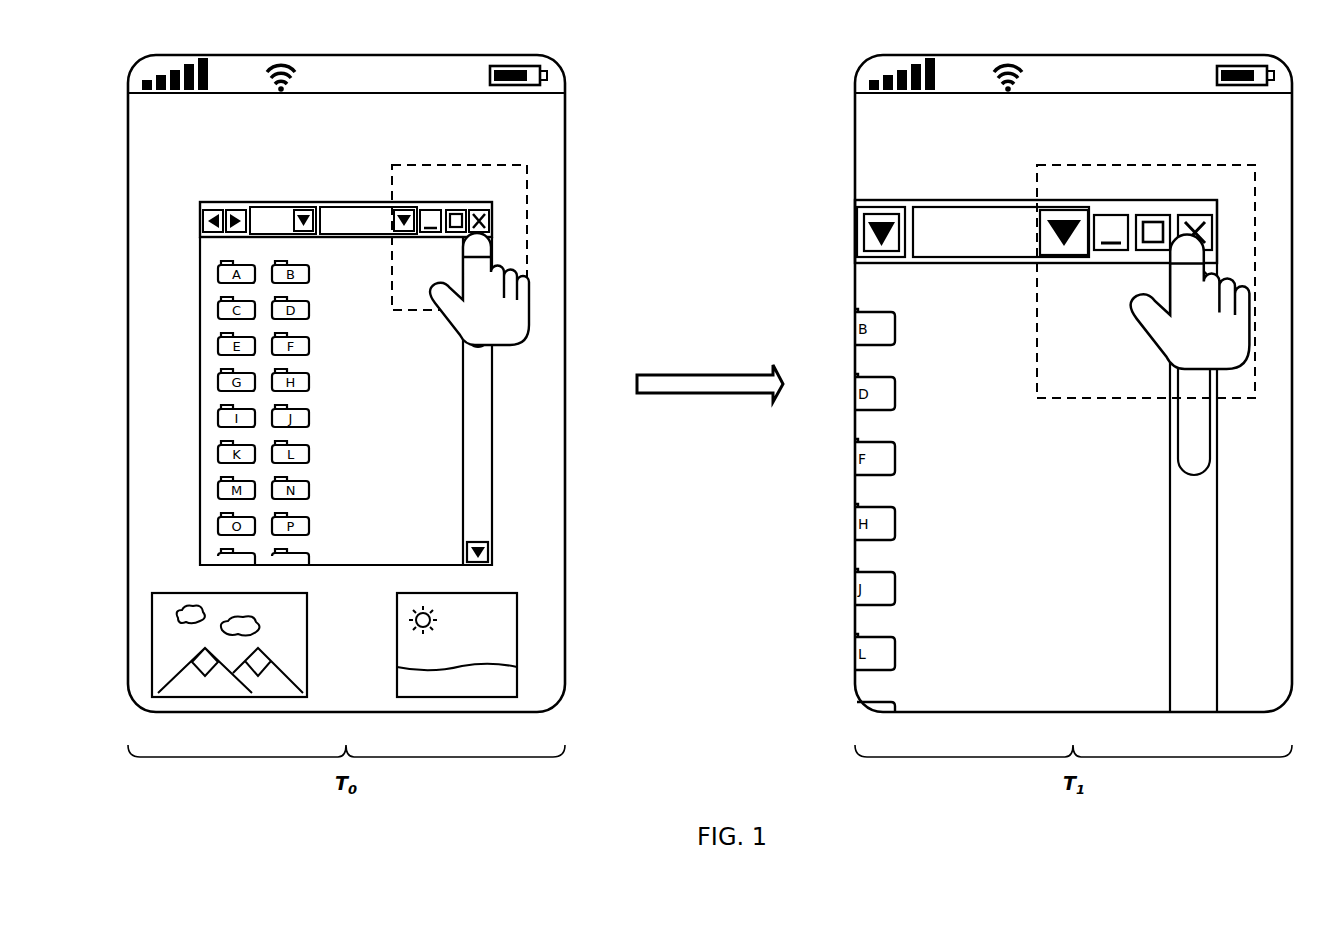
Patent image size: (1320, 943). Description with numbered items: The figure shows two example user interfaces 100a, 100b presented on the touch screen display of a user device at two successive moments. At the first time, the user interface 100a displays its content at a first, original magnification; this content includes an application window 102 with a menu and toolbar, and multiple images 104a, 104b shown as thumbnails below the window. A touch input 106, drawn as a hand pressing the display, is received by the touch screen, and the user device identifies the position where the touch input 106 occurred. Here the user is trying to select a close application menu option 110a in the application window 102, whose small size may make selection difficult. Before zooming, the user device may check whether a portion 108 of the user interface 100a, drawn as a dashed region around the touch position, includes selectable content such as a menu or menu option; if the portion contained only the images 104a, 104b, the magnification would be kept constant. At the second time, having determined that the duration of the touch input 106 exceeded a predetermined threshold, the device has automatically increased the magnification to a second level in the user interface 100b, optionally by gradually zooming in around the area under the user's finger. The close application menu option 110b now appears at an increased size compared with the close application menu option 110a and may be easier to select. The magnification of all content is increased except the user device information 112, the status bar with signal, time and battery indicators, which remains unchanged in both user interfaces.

The user interface 100a is at (200, 55).
The user interface 100b is at (928, 55).
The application window 102 is at (235, 202).
The image 104a is at (307, 610).
The image 104b is at (397, 658).
The touch input 106 is at (500, 347).
The portion of the user interface 108 is at (392, 165).
The close application menu option 110a is at (482, 210).
The close application menu option 110b is at (1200, 214).
The user device information 112 is at (122, 58).